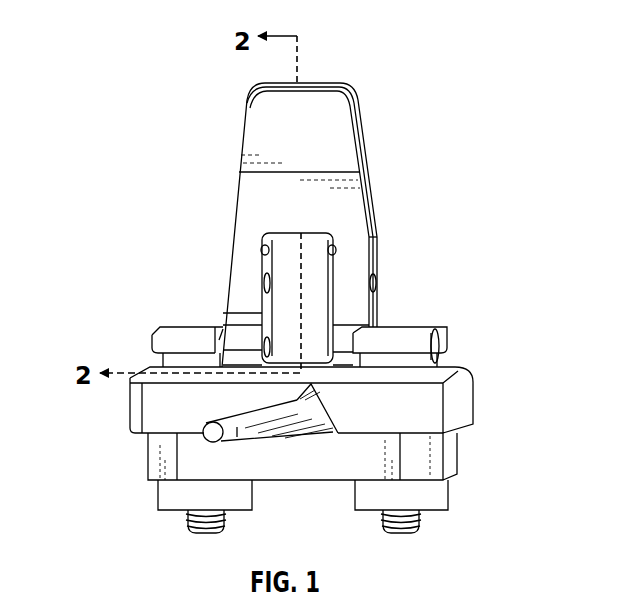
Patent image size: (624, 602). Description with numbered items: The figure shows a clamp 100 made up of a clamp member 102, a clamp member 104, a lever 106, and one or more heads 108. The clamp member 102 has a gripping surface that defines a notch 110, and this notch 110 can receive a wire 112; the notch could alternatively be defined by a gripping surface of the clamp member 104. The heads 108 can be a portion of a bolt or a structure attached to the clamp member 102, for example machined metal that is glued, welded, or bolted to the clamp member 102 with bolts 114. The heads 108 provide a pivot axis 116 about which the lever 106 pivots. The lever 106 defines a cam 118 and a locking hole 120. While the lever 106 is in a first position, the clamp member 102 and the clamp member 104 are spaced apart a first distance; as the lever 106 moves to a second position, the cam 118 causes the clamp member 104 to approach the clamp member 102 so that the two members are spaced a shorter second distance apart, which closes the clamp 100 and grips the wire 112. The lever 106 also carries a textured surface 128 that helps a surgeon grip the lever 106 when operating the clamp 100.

The clamp 100 is at (137, 58).
The clamp member 102 is at (148, 367).
The clamp member 104 is at (340, 479).
The lever 106 is at (362, 128).
The heads 108 is at (175, 326).
The notch 110 is at (307, 382).
The wire 112 is at (237, 437).
The bolts 114 is at (183, 525).
The pivot axis 116 is at (442, 348).
The cam 118 is at (260, 262).
The locking hole 120 is at (377, 283).
The textured surface 128 is at (240, 146).